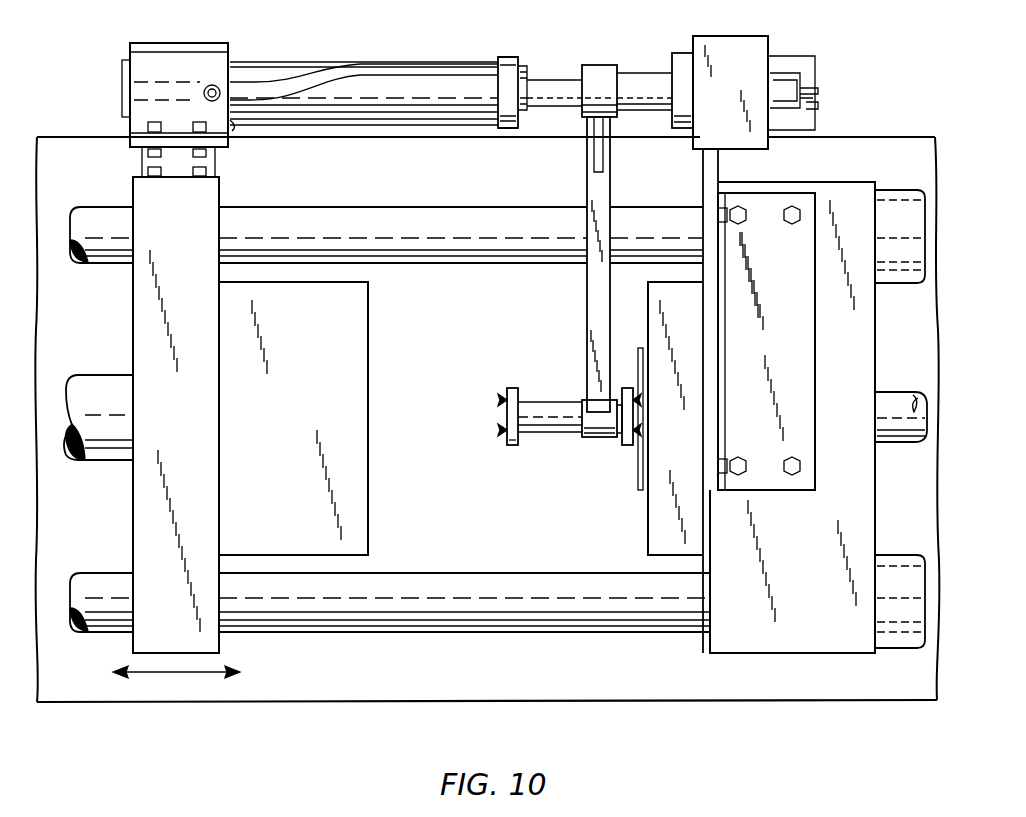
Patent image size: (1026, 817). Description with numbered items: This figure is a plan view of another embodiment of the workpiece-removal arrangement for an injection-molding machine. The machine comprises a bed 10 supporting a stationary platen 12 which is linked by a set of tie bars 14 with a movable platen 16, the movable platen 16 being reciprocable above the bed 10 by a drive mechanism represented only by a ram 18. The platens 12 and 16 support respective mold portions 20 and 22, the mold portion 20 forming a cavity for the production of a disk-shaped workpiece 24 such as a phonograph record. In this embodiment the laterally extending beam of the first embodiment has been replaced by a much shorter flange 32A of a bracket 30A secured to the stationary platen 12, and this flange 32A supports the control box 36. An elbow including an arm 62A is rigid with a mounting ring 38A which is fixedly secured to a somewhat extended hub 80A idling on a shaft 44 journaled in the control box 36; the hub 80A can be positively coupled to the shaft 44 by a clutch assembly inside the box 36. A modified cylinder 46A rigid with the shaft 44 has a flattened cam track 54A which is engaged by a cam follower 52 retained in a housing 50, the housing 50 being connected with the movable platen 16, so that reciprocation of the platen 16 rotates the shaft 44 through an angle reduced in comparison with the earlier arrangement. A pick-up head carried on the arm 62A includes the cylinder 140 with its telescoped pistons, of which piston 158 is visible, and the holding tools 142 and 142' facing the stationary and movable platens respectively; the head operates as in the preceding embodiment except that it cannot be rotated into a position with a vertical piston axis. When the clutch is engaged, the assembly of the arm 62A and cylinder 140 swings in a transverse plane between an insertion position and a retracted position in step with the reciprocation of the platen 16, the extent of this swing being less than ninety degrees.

The bed 10 is at (586, 695).
The stationary platen 12 is at (792, 417).
The tie bars 14 is at (511, 216).
The movable platen 16 is at (176, 427).
The ram 18 is at (106, 385).
The mold portion 20 is at (648, 535).
The mold portion 22 is at (293, 418).
The disk-shaped workpiece 24 is at (640, 356).
The bracket 30A is at (766, 341).
The flange 32A is at (710, 177).
The control box 36 is at (745, 92).
The mounting ring 38A is at (600, 73).
The shaft 44 is at (555, 85).
The modified cylinder 46A is at (414, 112).
The housing 50 is at (182, 44).
The cam follower 52 is at (214, 99).
The flattened cam track 54A is at (265, 92).
The arm 62A is at (590, 312).
The hub 80A is at (650, 78).
The cylinder 140 is at (594, 434).
The holding tool 142 is at (652, 430).
The holding tool 142' is at (510, 435).
The piston 158 is at (556, 407).